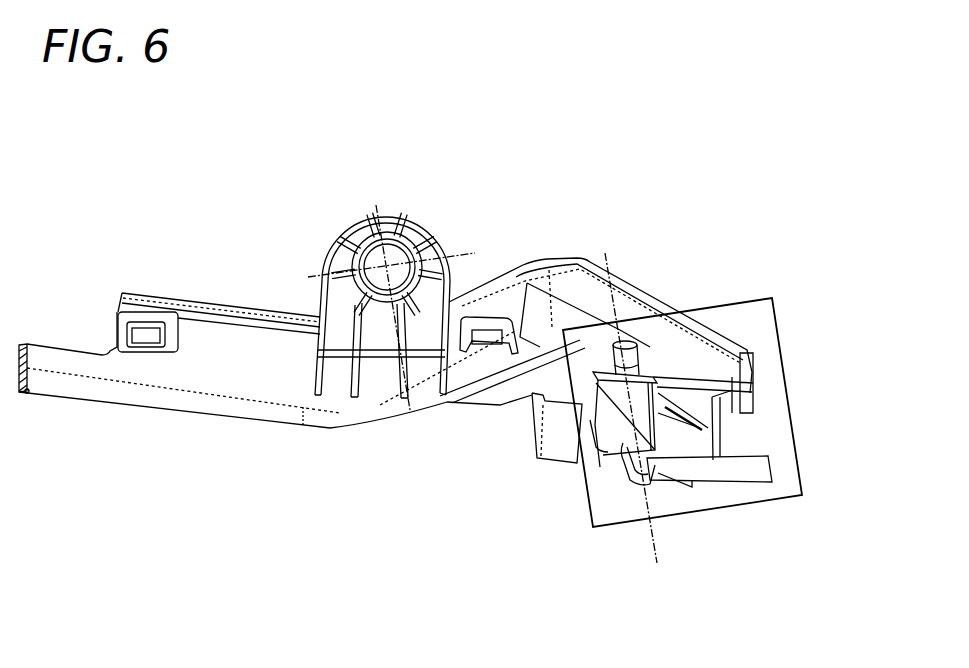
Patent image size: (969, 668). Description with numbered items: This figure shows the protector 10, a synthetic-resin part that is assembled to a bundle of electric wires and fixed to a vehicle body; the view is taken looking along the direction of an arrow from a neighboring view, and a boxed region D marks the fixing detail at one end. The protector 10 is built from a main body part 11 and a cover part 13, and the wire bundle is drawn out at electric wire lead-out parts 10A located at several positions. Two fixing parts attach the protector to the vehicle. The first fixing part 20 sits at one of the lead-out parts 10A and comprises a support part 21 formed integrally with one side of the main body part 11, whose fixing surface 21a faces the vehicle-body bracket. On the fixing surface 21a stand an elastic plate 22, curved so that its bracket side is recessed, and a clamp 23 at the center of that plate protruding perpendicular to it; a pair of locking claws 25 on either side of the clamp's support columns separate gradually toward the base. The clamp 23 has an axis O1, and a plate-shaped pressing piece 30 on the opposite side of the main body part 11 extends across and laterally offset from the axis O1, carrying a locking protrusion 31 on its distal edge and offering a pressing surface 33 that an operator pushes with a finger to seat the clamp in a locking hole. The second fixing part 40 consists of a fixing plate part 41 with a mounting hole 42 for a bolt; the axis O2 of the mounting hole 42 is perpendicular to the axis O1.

The protector 10 is at (158, 232).
The electric wire lead-out part 10A is at (107, 347).
The main body part 11 is at (216, 414).
The cover part 13 is at (216, 297).
The fixing part 20 is at (588, 425).
The support part 21 is at (611, 410).
The fixing surface 21a is at (597, 367).
The elastic plate 22 is at (640, 415).
The clamp 23 is at (620, 340).
The locking claw 25 is at (644, 368).
The pressing piece 30 is at (760, 455).
The locking protrusion 31 is at (770, 478).
The pressing surface 33 is at (743, 478).
The fixing part 40 is at (336, 224).
The fixing plate part 41 is at (330, 252).
The mounting hole 42 is at (382, 232).
The axis of the clamp O1 is at (652, 545).
The axis of the mounting hole O2 is at (413, 222).
The detail region D is at (692, 518).